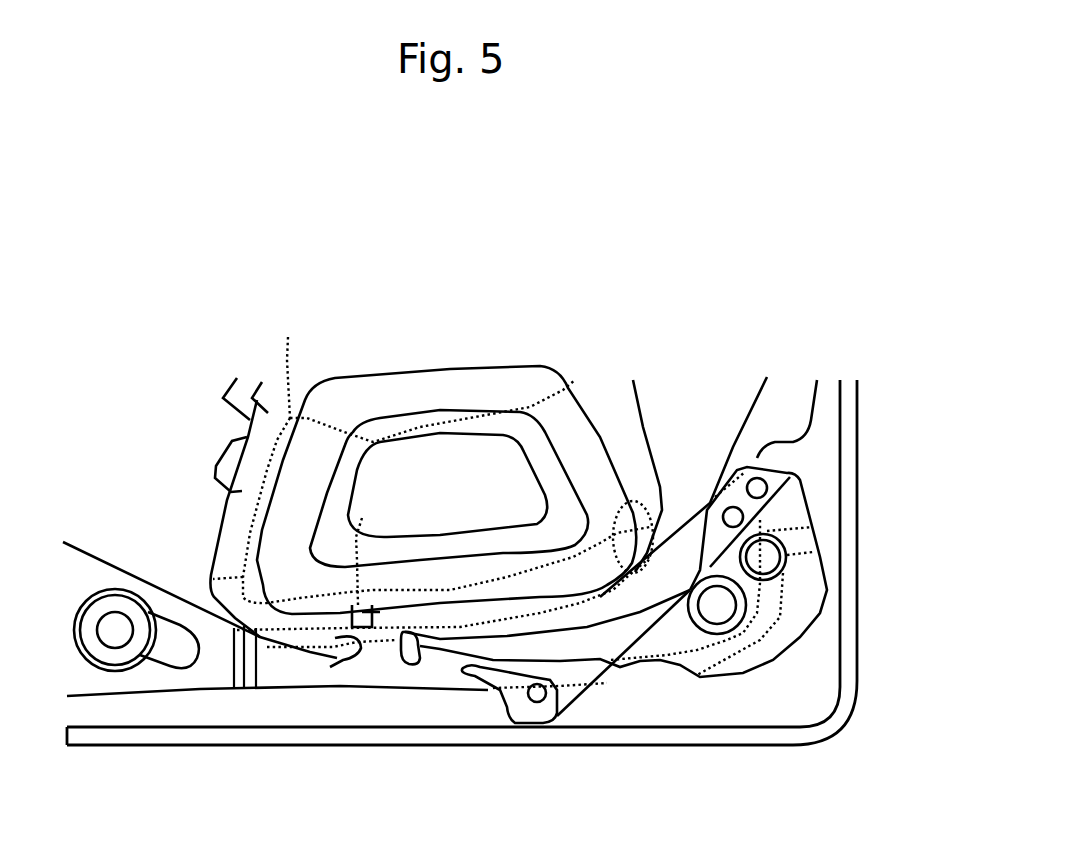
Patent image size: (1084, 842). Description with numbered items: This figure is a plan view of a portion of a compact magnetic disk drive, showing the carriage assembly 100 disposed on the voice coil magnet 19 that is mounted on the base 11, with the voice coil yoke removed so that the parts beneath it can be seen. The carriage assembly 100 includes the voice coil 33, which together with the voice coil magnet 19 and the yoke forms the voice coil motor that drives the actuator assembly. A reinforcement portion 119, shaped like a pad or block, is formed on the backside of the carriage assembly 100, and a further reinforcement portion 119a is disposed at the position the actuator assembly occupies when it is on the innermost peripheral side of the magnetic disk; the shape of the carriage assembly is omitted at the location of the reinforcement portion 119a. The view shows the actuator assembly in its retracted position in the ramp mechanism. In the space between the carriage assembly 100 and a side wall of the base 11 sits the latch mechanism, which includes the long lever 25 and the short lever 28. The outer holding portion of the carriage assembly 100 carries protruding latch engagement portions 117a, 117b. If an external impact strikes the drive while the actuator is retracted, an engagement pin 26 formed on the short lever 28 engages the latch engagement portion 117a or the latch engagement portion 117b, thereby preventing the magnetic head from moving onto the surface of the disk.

The base 11 is at (857, 566).
The voice coil magnet 19 is at (288, 337).
The long lever 25 is at (195, 690).
The engagement pin 26 is at (550, 713).
The short lever 28 is at (585, 704).
The voice coil 33 is at (447, 370).
The carriage assembly 100 is at (257, 400).
The latch engagement portion 117a is at (346, 665).
The latch engagement portion 117b is at (410, 665).
The reinforcement portion 119 is at (362, 518).
The reinforcement portion 119a is at (635, 497).